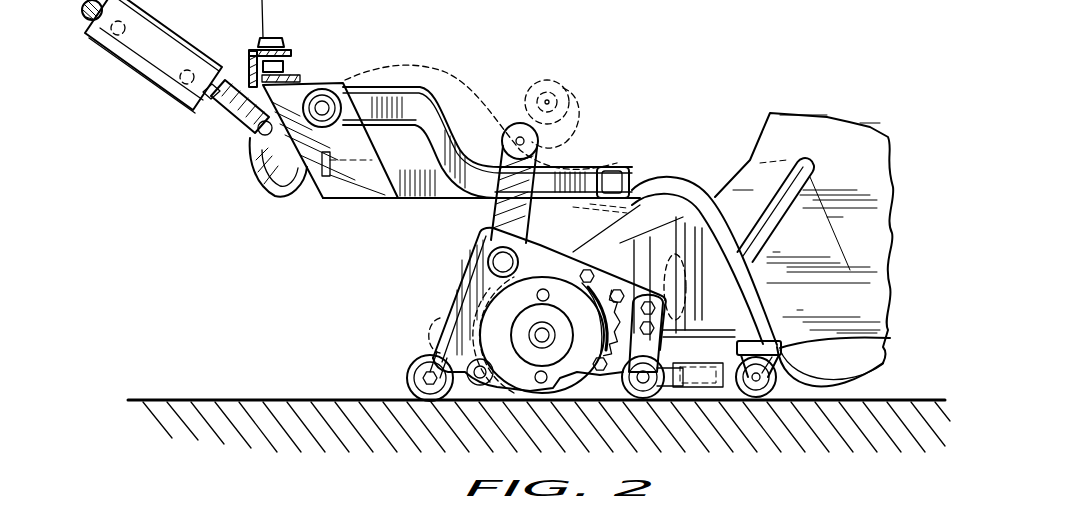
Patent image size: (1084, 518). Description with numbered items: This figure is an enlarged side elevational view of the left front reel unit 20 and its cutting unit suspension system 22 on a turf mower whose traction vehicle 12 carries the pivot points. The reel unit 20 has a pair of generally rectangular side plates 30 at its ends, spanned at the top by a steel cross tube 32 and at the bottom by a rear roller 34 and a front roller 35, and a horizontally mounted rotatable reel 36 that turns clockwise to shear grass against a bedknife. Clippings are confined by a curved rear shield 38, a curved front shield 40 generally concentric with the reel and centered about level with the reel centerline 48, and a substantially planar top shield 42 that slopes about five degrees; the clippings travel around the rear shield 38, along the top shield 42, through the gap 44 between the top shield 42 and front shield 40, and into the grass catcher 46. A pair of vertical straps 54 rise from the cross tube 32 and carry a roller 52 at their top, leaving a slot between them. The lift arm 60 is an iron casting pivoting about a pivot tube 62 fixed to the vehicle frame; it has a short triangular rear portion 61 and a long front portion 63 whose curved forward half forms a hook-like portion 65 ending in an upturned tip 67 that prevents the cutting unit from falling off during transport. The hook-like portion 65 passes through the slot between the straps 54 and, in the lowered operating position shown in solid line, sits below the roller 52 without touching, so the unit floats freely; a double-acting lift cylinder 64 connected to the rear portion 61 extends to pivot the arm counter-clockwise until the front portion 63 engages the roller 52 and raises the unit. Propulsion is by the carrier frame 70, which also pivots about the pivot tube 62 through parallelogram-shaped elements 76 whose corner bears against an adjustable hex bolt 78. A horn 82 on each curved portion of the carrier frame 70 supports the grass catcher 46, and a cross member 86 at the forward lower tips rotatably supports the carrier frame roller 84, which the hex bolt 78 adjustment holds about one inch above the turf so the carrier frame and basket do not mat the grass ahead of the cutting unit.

The traction vehicle 12 is at (252, 53).
The reel unit 20 is at (484, 309).
The cutting unit suspension system 22 is at (514, 82).
The side plates 30 is at (515, 303).
The cross tube 32 is at (488, 266).
The rear roller 34 is at (407, 380).
The front roller 35 is at (683, 423).
The reel 36 is at (480, 402).
The rear shield 38 is at (483, 302).
The front shield 40 is at (603, 380).
The top shield 42 is at (583, 253).
The gap 44 is at (606, 255).
The grass catcher 46 is at (826, 231).
The centerline 48 is at (542, 335).
The roller 52 is at (527, 172).
The elongate elements or straps 54 is at (505, 221).
The lift arm 60 is at (481, 115).
The rear portion 61 is at (287, 180).
The pivot tube 62 is at (323, 90).
The front portion 63 is at (417, 105).
The lift cylinder 64 is at (157, 72).
The hook-like portion 65 is at (448, 140).
The tip 67 is at (570, 168).
The carrier frame 70 is at (638, 157).
The parallelogram-shaped elements 76 is at (365, 193).
The hex bolt 78 is at (292, 66).
The horn 82 is at (803, 160).
The carrier frame roller 84 is at (835, 388).
The cross member 86 is at (870, 339).